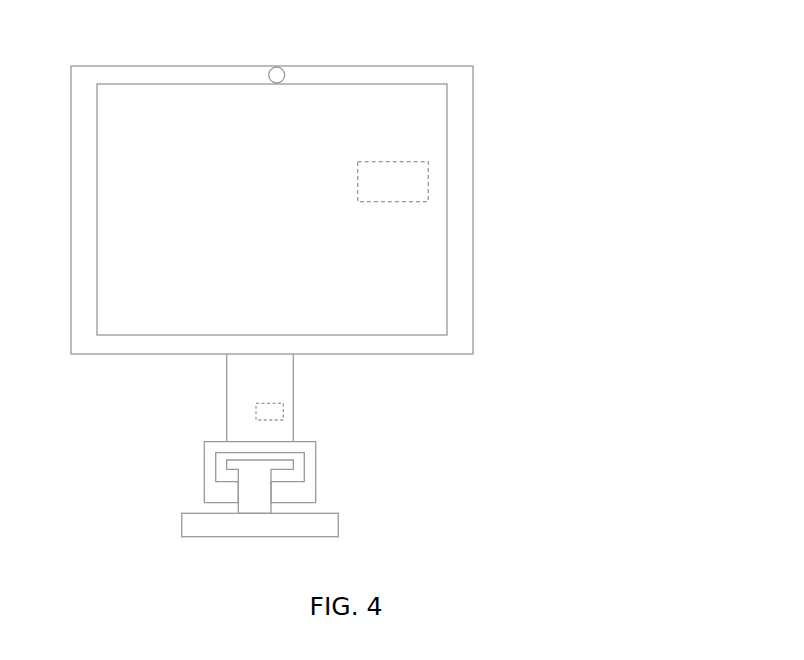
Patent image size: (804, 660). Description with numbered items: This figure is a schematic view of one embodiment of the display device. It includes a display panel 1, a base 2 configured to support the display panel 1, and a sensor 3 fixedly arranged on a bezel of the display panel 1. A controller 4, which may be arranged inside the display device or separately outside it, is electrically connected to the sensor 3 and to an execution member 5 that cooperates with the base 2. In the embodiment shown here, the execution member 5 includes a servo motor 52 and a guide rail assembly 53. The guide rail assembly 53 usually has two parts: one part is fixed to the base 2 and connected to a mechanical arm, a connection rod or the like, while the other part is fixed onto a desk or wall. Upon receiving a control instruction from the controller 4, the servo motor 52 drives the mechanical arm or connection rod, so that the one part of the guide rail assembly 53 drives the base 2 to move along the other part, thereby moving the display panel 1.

The display panel 1 is at (428, 306).
The base 2 is at (243, 385).
The sensor 3 is at (279, 74).
The controller 4 is at (428, 180).
The execution member 5 is at (440, 368).
The servo motor 52 is at (283, 412).
The guide rail assembly 53 is at (316, 524).